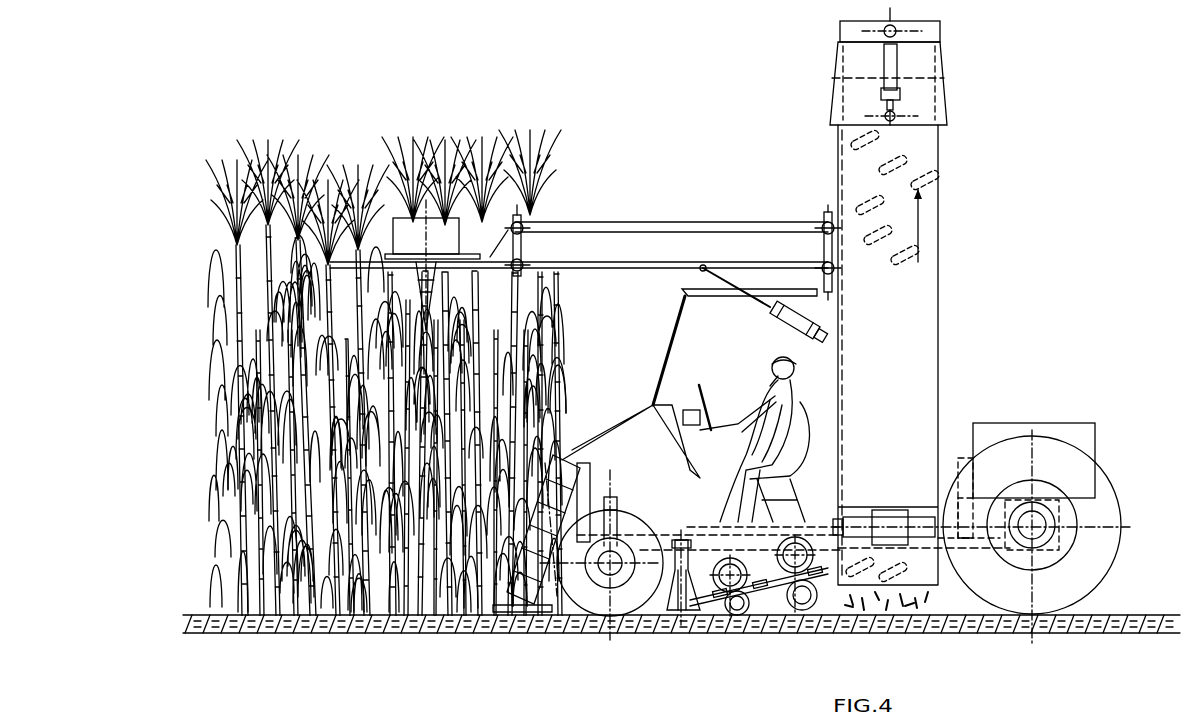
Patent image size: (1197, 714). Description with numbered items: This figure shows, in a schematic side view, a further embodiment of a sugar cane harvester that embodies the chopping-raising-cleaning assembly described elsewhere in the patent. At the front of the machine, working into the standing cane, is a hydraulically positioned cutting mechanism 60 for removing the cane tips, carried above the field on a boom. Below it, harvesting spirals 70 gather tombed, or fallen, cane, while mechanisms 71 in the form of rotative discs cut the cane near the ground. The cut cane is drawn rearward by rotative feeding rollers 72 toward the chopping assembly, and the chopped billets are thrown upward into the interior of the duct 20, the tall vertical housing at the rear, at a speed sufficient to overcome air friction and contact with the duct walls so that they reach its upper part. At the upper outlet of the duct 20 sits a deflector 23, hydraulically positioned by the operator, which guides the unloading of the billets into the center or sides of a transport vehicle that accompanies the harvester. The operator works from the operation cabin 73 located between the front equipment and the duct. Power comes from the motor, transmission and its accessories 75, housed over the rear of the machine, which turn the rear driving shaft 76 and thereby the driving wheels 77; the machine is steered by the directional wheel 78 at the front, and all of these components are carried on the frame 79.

The duct 20 is at (940, 330).
The deflector 23 is at (922, 105).
The cutting mechanism for cane tips 60 is at (452, 236).
The harvesting spirals 70 is at (561, 460).
The cane cutting mechanisms 71 is at (677, 600).
The rotative feeding rollers 72 is at (801, 607).
The operation cabin 73 is at (671, 336).
The motor, transmission and its accessories 75 is at (1046, 434).
The rear driving shaft 76 is at (1041, 522).
The driving wheels 77 is at (1076, 573).
The directional wheel 78 is at (589, 593).
The frame 79 is at (963, 545).